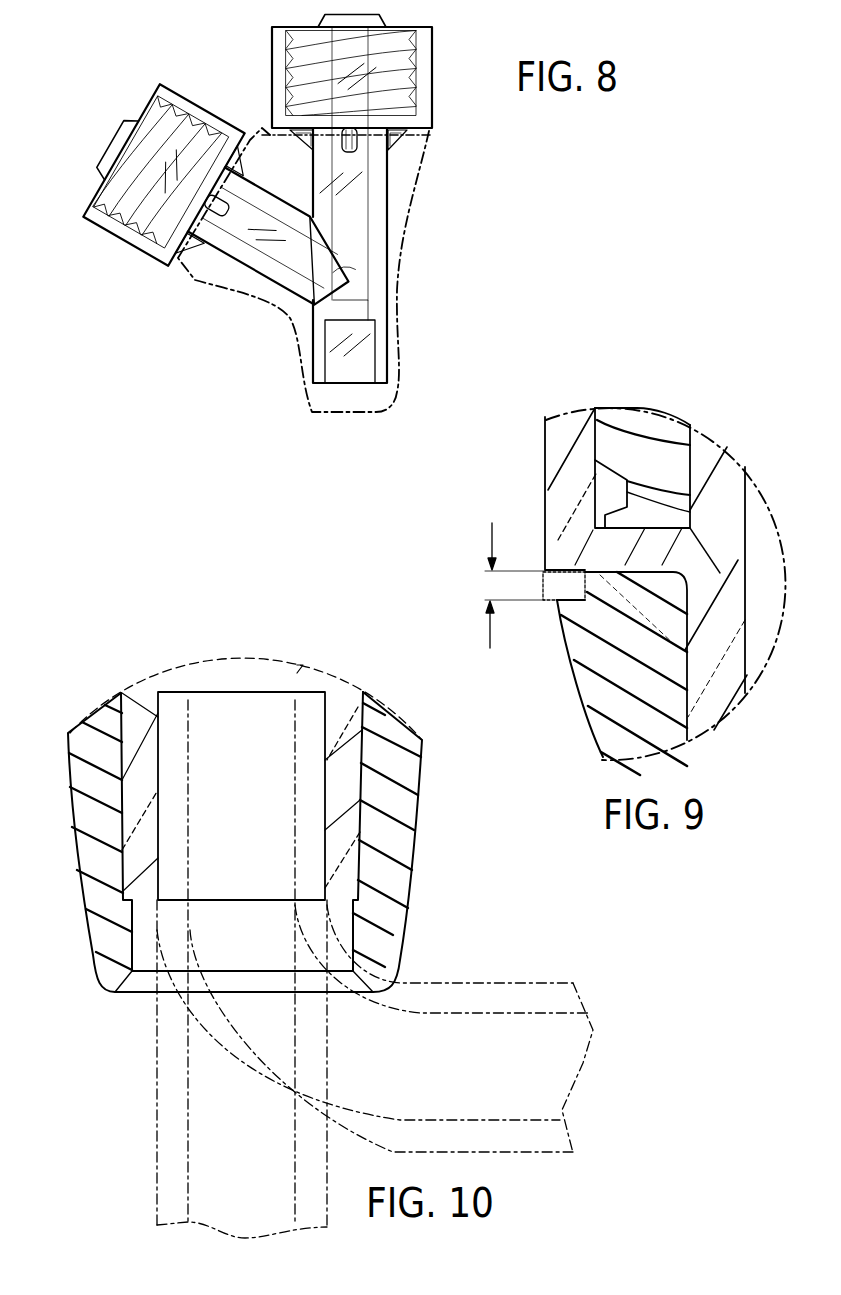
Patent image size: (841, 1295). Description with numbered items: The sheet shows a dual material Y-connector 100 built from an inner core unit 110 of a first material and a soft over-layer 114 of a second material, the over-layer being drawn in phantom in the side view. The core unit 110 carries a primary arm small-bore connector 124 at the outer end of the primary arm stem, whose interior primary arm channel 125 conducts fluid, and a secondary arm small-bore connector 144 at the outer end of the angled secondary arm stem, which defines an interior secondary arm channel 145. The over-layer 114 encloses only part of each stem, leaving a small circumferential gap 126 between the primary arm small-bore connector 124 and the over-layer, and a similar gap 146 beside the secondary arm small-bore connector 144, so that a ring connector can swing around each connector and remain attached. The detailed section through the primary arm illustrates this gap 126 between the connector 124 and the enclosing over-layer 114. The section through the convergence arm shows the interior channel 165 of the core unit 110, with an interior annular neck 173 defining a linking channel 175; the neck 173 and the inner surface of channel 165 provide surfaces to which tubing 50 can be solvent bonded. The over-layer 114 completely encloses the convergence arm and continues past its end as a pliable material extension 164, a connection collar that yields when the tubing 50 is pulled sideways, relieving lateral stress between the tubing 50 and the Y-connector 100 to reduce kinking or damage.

In FIG. 10, the tubing 50 is at (190, 763).
In FIG. 8, the dual material Y-connector 100 is at (555, 200).
In FIG. 8, the inner core unit 110 is at (387, 260).
In FIG. 9, the inner core unit 110 is at (547, 518).
In FIG. 8, the over-layer unit 114 is at (262, 128).
In FIG. 9, the over-layer unit 114 is at (577, 690).
In FIG. 8, the primary arm small-bore connector 124 is at (427, 40).
In FIG. 9, the primary arm small-bore connector 124 is at (547, 465).
In FIG. 8, the interior primary arm channel 125 is at (353, 193).
In FIG. 8, the circumferential gap 126 is at (427, 128).
In FIG. 9, the circumferential gap 126 is at (492, 528).
In FIG. 8, the secondary arm small-bore connector 144 is at (182, 95).
In FIG. 8, the interior secondary arm channel 145 is at (253, 230).
In FIG. 8, the circumferential gap 146 is at (180, 257).
In FIG. 10, the pliable material extension 164 is at (413, 960).
In FIG. 8, the interior channel 165 is at (360, 365).
In FIG. 10, the interior channel 165 is at (162, 748).
In FIG. 10, the interior annular neck 173 is at (297, 690).
In FIG. 10, the linking channel 175 is at (252, 668).